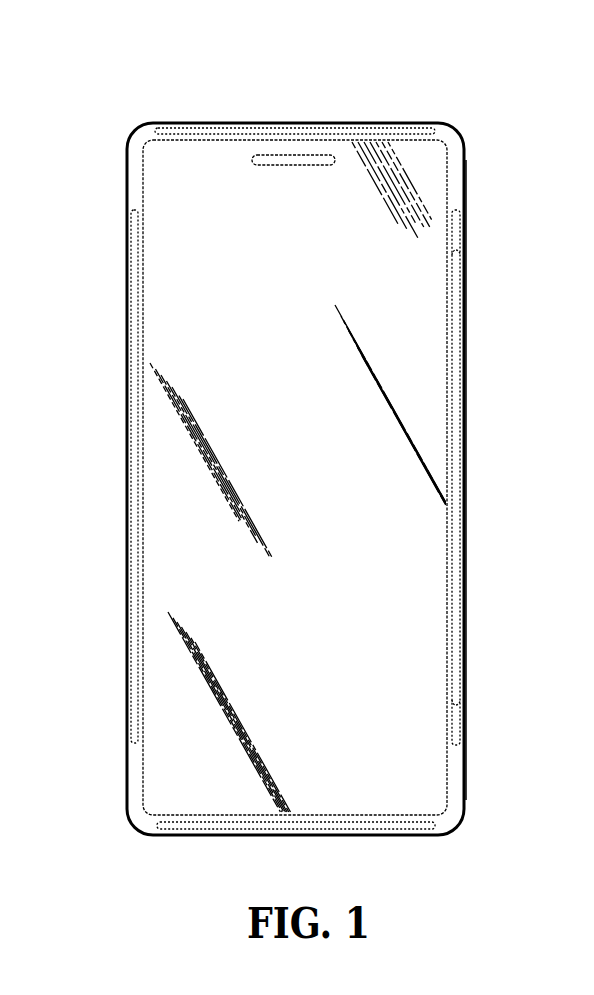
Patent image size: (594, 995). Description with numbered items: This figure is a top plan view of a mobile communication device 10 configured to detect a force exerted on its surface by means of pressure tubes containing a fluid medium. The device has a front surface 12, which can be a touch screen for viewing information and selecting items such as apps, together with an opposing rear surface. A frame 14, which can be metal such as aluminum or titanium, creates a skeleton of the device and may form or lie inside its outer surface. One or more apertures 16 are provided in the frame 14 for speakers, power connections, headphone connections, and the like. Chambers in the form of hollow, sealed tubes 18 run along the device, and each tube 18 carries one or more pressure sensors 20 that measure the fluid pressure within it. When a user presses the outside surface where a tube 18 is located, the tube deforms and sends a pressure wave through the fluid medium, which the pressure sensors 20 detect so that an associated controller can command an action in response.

The mobile communication device 10 is at (477, 108).
The front surface 12 is at (307, 471).
The frame 14 is at (458, 802).
The aperture 16 is at (323, 155).
The tube 18 is at (195, 122).
The pressure sensor 20 is at (455, 260).